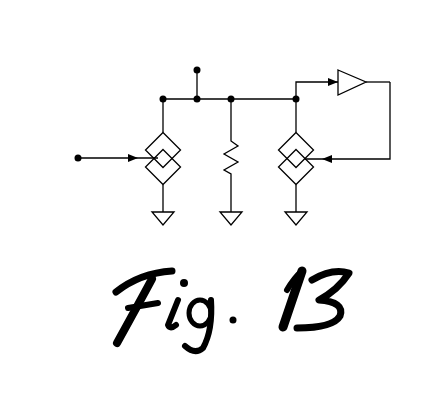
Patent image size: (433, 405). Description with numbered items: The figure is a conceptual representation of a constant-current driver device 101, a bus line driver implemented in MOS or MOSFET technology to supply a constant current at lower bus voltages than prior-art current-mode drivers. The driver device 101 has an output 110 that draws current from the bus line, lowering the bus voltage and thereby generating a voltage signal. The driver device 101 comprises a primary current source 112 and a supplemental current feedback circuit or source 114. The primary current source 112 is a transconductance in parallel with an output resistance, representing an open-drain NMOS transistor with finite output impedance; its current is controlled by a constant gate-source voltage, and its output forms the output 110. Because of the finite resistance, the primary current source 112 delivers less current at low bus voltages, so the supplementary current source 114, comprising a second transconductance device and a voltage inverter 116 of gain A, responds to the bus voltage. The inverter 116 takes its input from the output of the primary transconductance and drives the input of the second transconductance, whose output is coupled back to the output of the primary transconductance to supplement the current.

The constant-current driver device 101 is at (261, 40).
The output 110 is at (200, 71).
The primary current source 112 is at (201, 230).
The supplemental current feedback circuit 114 is at (358, 185).
The voltage inverter 116 is at (346, 74).